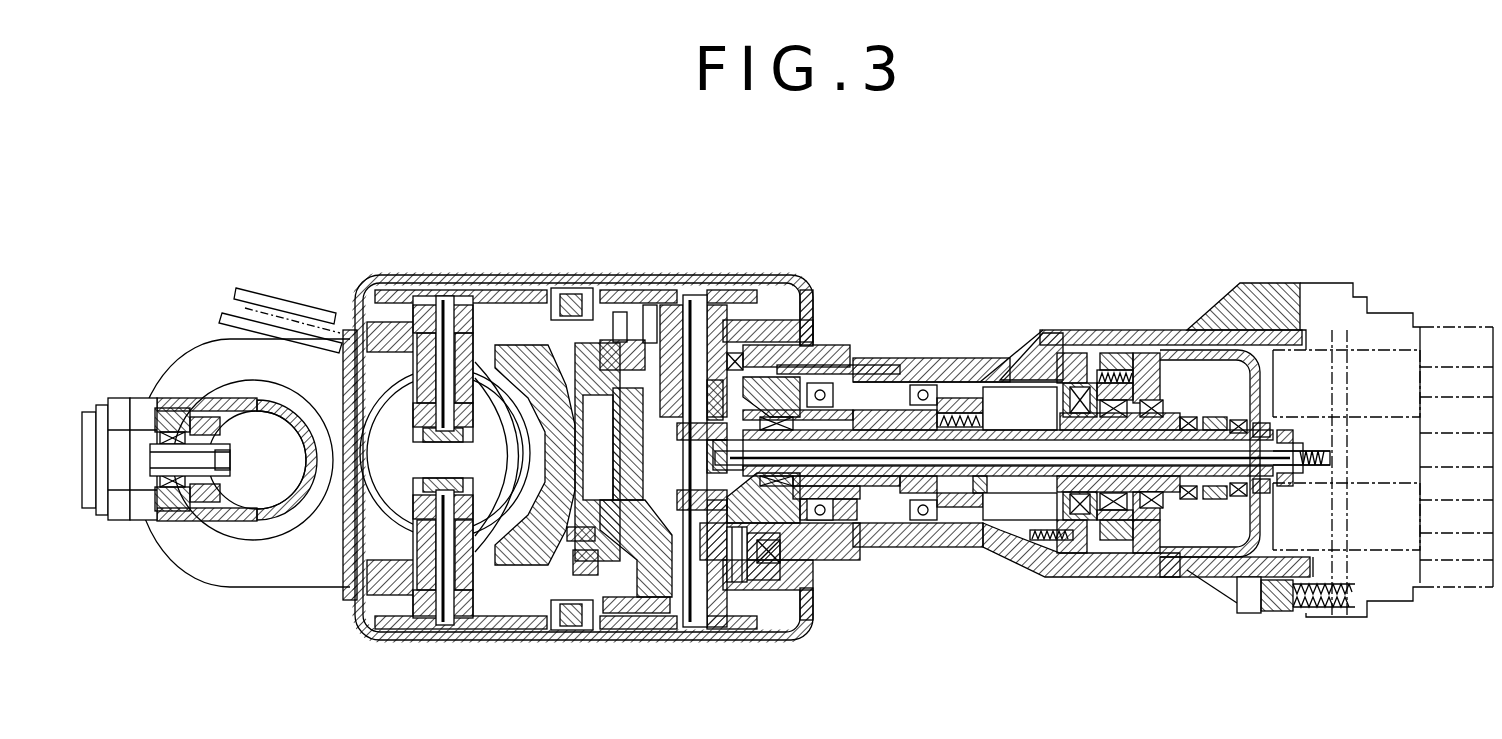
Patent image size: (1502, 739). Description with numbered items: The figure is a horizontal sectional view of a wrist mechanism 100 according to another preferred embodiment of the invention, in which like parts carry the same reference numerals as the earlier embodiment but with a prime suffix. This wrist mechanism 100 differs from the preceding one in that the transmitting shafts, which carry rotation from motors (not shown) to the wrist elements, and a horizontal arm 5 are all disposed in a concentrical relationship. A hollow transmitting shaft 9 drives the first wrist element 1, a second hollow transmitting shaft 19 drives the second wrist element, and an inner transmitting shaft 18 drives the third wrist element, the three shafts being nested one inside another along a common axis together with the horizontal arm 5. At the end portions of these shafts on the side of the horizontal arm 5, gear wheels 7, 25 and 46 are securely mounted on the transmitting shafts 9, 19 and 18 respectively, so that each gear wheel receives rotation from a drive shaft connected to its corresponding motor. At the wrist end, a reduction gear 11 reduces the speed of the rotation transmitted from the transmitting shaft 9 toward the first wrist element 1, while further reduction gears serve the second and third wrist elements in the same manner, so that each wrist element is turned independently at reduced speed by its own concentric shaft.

The wrist mechanism 100 is at (597, 243).
The first wrist element 1 is at (817, 310).
The horizontal arm 5 is at (1027, 563).
The gear wheel 7 is at (1203, 480).
The transmitting shaft 9 is at (1177, 480).
The reduction gear 11 is at (1049, 486).
The transmitting shaft 18 is at (907, 455).
The transmitting shaft 19 is at (878, 477).
The gear wheel 25 is at (1205, 470).
The gear wheel 46 is at (1293, 470).